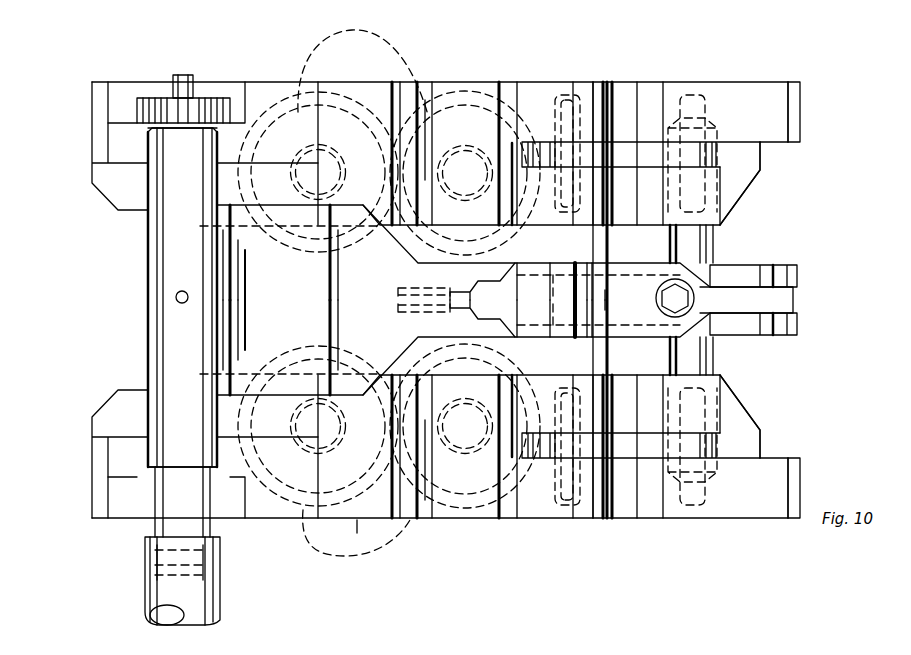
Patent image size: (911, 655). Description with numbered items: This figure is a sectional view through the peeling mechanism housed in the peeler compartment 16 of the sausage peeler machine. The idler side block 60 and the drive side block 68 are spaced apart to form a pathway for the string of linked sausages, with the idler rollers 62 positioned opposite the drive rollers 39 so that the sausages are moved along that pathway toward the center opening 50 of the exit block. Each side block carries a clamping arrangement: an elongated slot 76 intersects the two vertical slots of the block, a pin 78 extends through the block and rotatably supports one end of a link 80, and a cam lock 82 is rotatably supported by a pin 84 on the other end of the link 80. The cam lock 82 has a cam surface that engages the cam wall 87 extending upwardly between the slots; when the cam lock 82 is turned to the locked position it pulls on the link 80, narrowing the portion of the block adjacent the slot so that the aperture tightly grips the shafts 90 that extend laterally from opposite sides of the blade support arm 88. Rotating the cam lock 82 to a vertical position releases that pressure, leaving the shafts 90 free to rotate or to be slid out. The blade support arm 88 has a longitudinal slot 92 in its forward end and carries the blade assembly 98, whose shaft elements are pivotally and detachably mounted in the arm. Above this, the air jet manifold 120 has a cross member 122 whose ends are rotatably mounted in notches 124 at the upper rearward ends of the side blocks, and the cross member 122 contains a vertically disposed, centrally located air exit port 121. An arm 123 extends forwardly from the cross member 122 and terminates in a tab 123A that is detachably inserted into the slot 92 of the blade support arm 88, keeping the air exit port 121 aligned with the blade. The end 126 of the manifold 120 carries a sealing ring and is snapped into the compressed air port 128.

The peeler compartment 16 is at (713, 372).
The drive rollers 39 is at (356, 540).
The center opening 50 is at (137, 320).
The idler side block 60 is at (378, 81).
The idler rollers 62 is at (333, 267).
The drive side block 68 is at (357, 533).
The elongated slot 76 is at (760, 140).
The pin 78 is at (684, 95).
The link 80 is at (593, 90).
The cam lock 82 is at (523, 91).
The pin 84 is at (556, 105).
The cam wall 87 is at (620, 107).
The blade support arm 88 is at (412, 257).
The shafts 90 is at (714, 237).
The longitudinal slot 92 is at (735, 300).
The blade assembly 98 is at (413, 284).
The manifold 120 is at (147, 268).
The air exit port 121 is at (175, 292).
The cross member 122 is at (166, 160).
The arm 123 is at (573, 263).
The tab 123A is at (785, 300).
The notches 124 is at (146, 131).
The end 126 is at (215, 553).
The compressed air port 128 is at (215, 565).